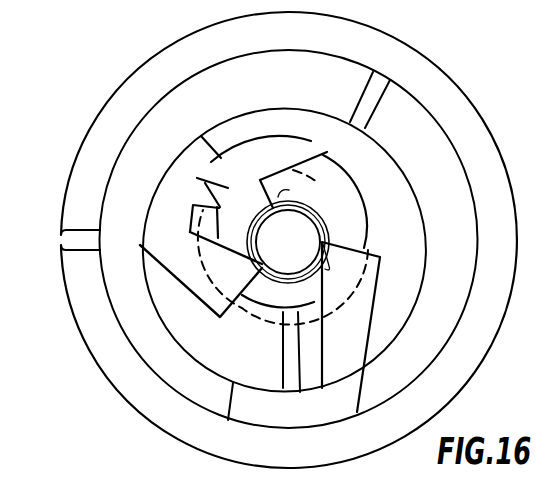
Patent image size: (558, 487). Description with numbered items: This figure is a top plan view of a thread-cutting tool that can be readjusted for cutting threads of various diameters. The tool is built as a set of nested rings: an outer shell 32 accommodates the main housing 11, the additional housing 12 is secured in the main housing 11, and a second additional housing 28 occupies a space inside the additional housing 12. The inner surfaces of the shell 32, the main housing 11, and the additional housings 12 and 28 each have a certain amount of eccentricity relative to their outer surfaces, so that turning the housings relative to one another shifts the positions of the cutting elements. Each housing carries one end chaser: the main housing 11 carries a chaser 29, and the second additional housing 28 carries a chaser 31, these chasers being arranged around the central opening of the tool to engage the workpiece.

The main housing 11 is at (430, 133).
The additional housing 12 is at (413, 220).
The second additional housing 28 is at (297, 153).
The chaser 29 is at (362, 298).
The chaser 31 is at (282, 182).
The shell 32 is at (423, 70).